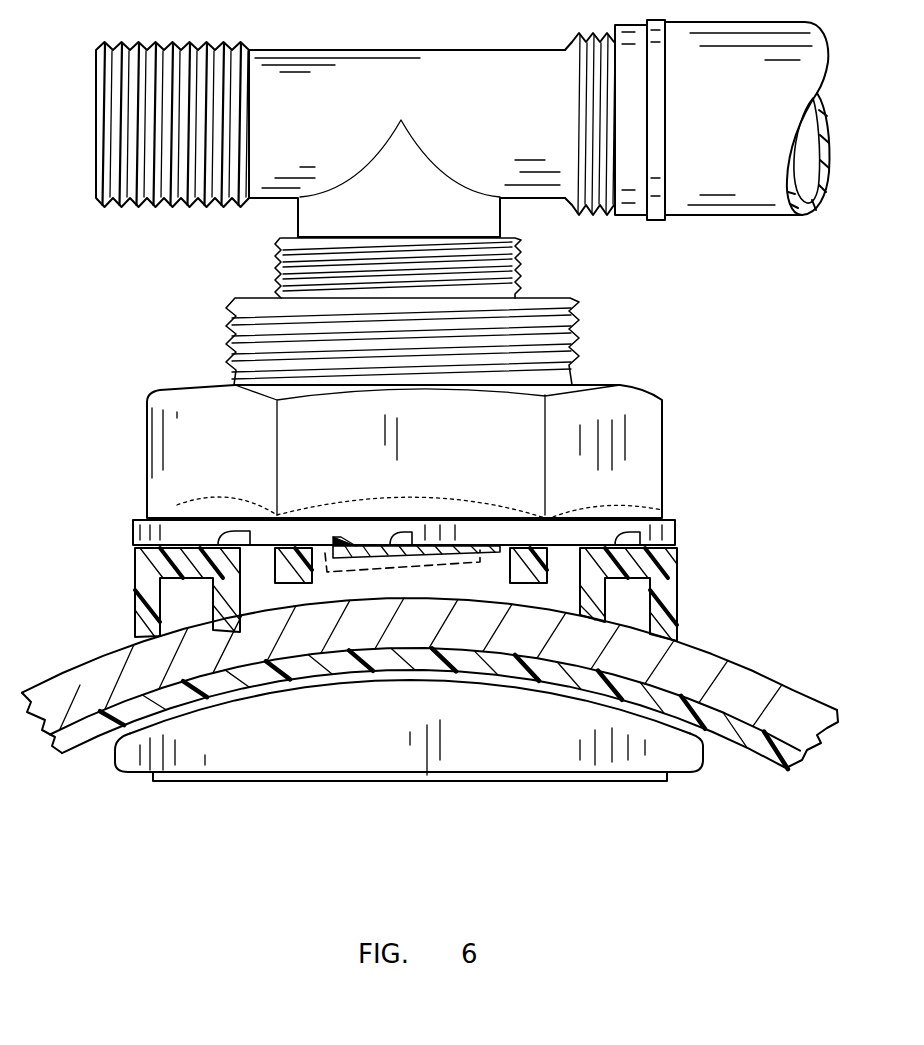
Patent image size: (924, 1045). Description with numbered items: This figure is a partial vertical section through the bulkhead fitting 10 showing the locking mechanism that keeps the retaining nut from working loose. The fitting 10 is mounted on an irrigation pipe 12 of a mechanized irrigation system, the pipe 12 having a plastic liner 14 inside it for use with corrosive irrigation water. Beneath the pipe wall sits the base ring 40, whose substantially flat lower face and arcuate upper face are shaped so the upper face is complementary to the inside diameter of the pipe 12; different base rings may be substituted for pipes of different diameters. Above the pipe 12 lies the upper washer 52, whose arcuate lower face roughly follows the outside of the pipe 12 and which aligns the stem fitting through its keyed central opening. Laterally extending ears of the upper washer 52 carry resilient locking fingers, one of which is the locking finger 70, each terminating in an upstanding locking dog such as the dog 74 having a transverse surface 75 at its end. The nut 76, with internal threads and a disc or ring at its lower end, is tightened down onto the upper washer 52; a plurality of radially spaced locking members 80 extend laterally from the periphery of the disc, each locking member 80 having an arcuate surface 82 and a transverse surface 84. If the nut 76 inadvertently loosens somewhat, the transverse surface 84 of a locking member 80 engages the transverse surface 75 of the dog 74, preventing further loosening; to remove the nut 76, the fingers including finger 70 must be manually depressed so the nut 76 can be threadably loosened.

The bulkhead fitting 10 is at (694, 434).
The irrigation pipe 12 is at (705, 657).
The plastic liner 14 is at (452, 665).
The base ring 40 is at (489, 750).
The upper washer 52 is at (679, 582).
The resilient locking finger 70 is at (470, 553).
The locking dog 74 is at (350, 545).
The transverse surface 75 is at (330, 545).
The nut 76 is at (207, 455).
The locking member 80 is at (640, 529).
The arcuate surface 82 is at (402, 540).
The transverse surface 84 is at (418, 543).